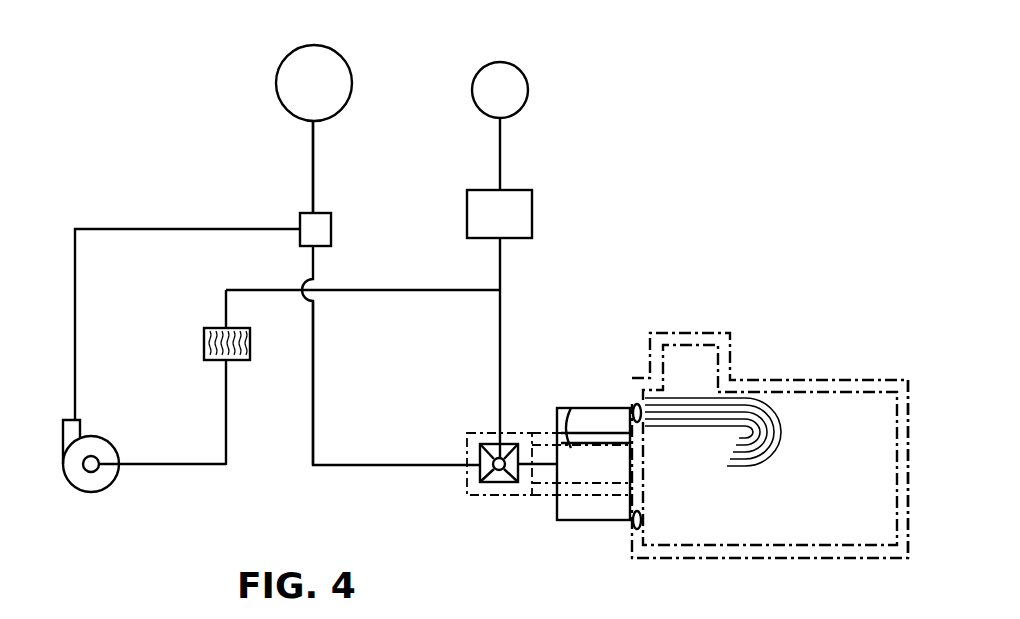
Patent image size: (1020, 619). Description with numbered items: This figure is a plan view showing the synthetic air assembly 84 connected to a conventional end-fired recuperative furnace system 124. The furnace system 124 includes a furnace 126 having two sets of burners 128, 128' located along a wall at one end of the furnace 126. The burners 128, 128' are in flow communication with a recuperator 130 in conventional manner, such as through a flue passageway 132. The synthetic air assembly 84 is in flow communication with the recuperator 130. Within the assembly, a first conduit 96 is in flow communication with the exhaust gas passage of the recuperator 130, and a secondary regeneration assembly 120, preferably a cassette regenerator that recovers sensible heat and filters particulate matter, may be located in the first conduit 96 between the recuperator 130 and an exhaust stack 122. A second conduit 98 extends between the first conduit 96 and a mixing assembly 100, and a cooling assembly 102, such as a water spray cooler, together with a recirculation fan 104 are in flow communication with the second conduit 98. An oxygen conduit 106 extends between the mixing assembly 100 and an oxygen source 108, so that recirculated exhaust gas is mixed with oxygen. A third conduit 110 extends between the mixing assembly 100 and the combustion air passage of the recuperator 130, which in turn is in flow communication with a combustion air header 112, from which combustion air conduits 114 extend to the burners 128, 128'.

The synthetic air assembly 84 is at (143, 109).
The first conduit 96 is at (500, 306).
The second conduit 98 is at (372, 290).
The mixing assembly 100 is at (300, 222).
The cooling assembly 102 is at (204, 340).
The recirculation fan 104 is at (103, 487).
The oxygen conduit 106 is at (312, 164).
The oxygen source 108 is at (332, 104).
The third conduit 110 is at (313, 353).
The combustion air header 112 is at (557, 510).
The combustion air conduits 114 is at (592, 407).
The secondary regeneration assembly 120 is at (532, 205).
The exhaust stack 122 is at (528, 89).
The end-fired recuperative furnace system 124 is at (784, 232).
The furnace 126 is at (850, 408).
The burners 128 is at (684, 392).
The burners 128' is at (680, 510).
The recuperator 130 is at (481, 481).
The flue passageway 132 is at (568, 420).